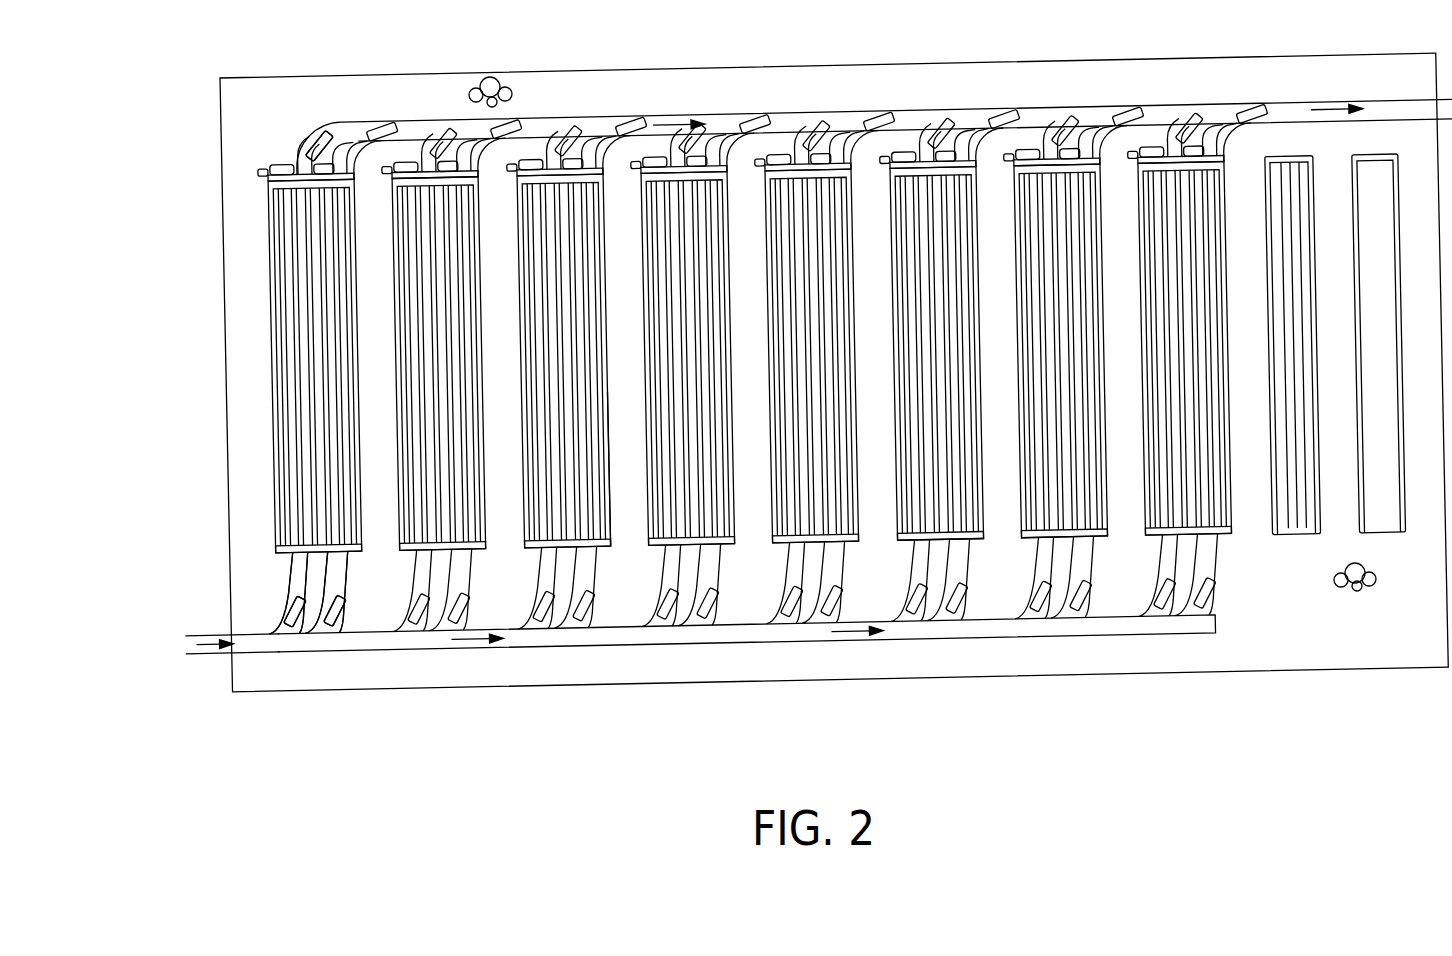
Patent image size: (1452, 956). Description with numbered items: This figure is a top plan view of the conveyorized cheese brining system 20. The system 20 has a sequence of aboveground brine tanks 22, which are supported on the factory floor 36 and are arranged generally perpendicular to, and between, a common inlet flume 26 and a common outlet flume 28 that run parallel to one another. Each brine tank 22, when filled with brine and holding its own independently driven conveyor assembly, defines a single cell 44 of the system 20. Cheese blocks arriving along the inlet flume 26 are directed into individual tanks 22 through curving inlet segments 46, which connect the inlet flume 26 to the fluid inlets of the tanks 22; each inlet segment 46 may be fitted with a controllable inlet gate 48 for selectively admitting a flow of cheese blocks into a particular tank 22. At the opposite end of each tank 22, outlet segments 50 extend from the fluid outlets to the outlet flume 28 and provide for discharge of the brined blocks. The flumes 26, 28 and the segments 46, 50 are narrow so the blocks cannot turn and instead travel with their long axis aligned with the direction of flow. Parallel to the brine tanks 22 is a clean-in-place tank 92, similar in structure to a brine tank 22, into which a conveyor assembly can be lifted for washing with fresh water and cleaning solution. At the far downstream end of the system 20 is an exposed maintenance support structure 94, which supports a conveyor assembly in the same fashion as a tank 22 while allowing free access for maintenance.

The conveyorized cheese brining system 20 is at (1006, 42).
The brine tank 22 is at (270, 243).
The common inlet flume 26 is at (598, 650).
The common outlet flume 28 is at (787, 112).
The factory floor 36 is at (936, 103).
The cell 44 is at (603, 520).
The inlet segment 46 is at (276, 579).
The inlet gate 48 is at (270, 640).
The outlet segment 50 is at (304, 140).
The clean-in-place tank 92 is at (1266, 512).
The maintenance support structure 94 is at (1400, 470).